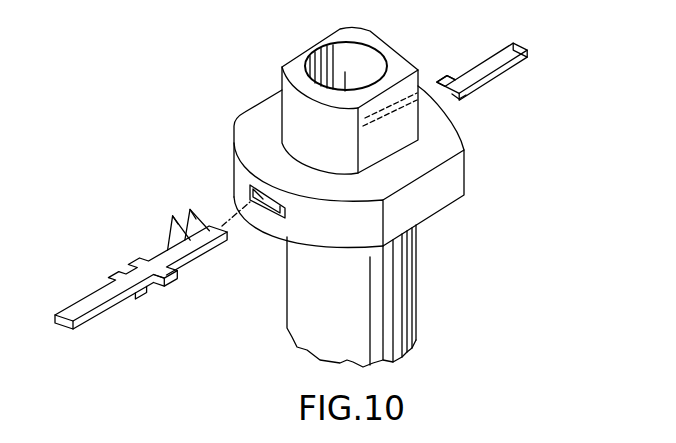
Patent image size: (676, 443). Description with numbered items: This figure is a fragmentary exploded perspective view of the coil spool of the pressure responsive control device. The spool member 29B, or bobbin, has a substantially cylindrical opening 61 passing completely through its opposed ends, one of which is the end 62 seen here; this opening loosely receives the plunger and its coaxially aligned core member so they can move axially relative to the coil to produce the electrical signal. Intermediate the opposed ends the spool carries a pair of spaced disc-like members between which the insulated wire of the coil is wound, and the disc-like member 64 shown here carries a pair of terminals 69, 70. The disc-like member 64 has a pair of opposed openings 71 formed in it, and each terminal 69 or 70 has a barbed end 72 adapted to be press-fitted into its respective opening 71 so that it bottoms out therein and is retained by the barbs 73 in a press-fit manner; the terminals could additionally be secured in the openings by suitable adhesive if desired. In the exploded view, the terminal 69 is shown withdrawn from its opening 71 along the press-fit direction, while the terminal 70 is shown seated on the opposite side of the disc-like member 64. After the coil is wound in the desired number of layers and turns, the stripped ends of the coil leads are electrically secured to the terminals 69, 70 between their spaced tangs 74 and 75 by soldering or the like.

The spool member 29B is at (415, 276).
The cylindrical opening 61 is at (374, 67).
The opposed end 62 is at (297, 67).
The disc-like member 64 is at (240, 130).
The terminal 69 is at (125, 251).
The terminal 70 is at (512, 68).
The opening 71 is at (250, 190).
The barbed end 72 is at (187, 225).
The barbs 73 is at (182, 233).
The tang 74 is at (146, 288).
The tang 75 is at (170, 282).